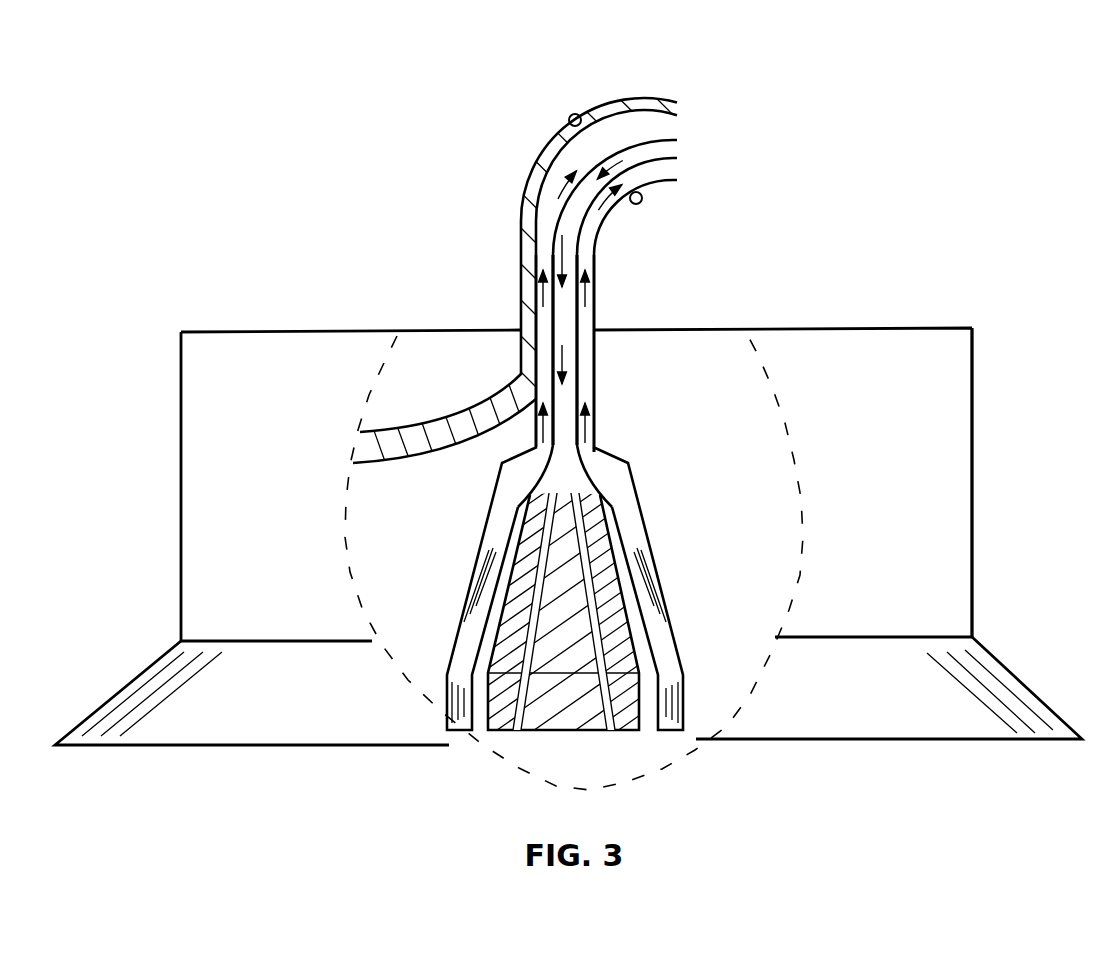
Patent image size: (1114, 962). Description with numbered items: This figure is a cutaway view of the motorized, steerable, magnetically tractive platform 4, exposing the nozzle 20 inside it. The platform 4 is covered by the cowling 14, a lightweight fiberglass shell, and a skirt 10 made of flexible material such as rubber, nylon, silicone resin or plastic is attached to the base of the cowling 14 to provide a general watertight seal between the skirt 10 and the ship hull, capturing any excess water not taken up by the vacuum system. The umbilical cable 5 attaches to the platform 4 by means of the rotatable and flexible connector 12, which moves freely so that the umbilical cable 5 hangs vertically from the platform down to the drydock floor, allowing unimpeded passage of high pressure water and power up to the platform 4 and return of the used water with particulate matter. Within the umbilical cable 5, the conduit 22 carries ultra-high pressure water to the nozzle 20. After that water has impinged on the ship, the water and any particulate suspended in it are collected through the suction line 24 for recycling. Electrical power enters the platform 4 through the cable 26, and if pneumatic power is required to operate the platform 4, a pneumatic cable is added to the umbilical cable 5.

The motorized, steerable, magnetically tractive platform 4 is at (927, 327).
The umbilical cable 5 is at (618, 112).
The skirt 10 is at (1013, 675).
The rotatable and flexible connector 12 is at (657, 202).
The cowling 14 is at (972, 401).
The nozzle 20 is at (644, 517).
The conduit 22 is at (565, 447).
The suction line 24 is at (550, 393).
The cable 26 is at (409, 430).